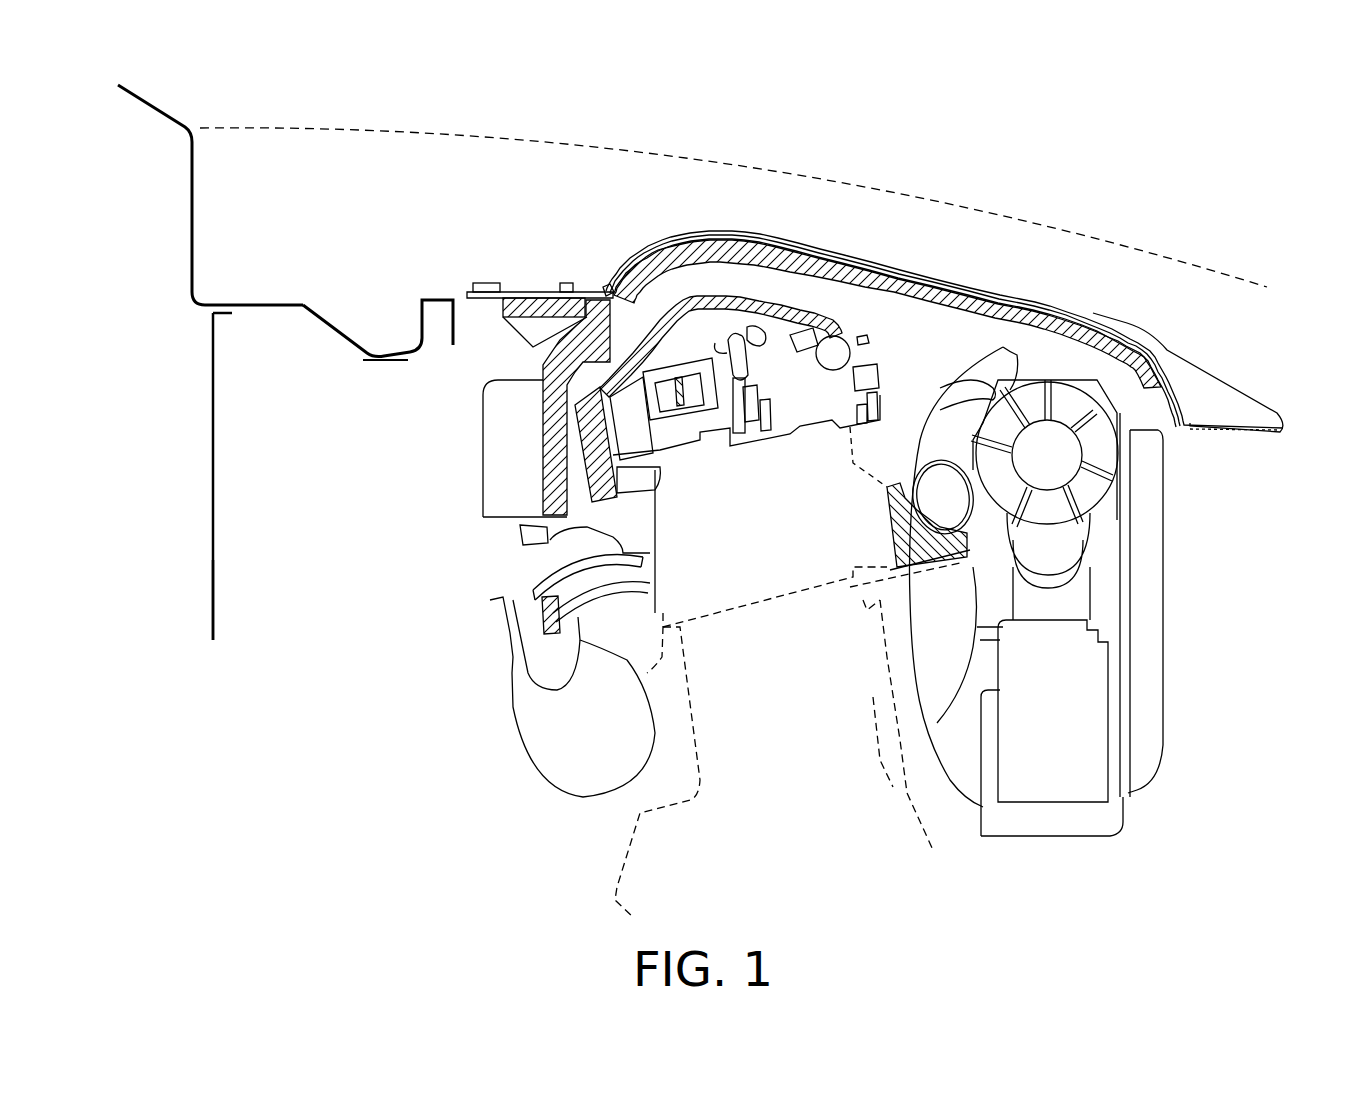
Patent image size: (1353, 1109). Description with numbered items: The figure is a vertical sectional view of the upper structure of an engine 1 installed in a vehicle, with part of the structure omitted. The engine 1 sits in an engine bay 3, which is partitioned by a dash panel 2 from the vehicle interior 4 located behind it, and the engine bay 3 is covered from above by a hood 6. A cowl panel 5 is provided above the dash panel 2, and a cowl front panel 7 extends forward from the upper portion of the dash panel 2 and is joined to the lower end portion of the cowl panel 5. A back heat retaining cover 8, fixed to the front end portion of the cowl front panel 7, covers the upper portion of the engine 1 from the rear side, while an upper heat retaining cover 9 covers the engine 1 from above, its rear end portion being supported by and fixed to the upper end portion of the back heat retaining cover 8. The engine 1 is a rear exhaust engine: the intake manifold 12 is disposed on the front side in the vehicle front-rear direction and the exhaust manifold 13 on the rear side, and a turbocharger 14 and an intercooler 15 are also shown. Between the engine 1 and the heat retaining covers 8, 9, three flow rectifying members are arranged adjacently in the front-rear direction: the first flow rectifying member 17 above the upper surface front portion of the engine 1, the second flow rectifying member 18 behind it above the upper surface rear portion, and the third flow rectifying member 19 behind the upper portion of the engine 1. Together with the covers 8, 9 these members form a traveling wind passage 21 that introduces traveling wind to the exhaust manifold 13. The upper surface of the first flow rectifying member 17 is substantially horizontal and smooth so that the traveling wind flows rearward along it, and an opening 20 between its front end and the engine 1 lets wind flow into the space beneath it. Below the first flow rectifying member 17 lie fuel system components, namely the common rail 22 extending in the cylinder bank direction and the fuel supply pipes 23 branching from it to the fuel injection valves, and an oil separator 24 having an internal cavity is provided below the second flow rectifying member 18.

The engine 1 is at (623, 850).
The dash panel 2 is at (212, 562).
The engine bay 3 is at (230, 481).
The vehicle interior 4 is at (207, 400).
The cowl panel 5 is at (192, 220).
The hood 6 is at (483, 135).
The cowl front panel 7 is at (317, 307).
The back heat retaining cover 8 is at (482, 460).
The upper heat retaining cover 9 is at (797, 242).
The intake manifold 12 is at (975, 477).
The exhaust manifold 13 is at (547, 553).
The turbocharger 14 is at (1070, 380).
The intercooler 15 is at (1060, 837).
The first flow rectifying member 17 is at (817, 323).
The second flow rectifying member 18 is at (660, 313).
The third flow rectifying member 19 is at (587, 393).
The opening 20 is at (850, 340).
The traveling wind passage 21 is at (762, 290).
The common rail 22 is at (847, 368).
The fuel supply pipes 23 is at (720, 320).
The oil separator 24 is at (656, 316).